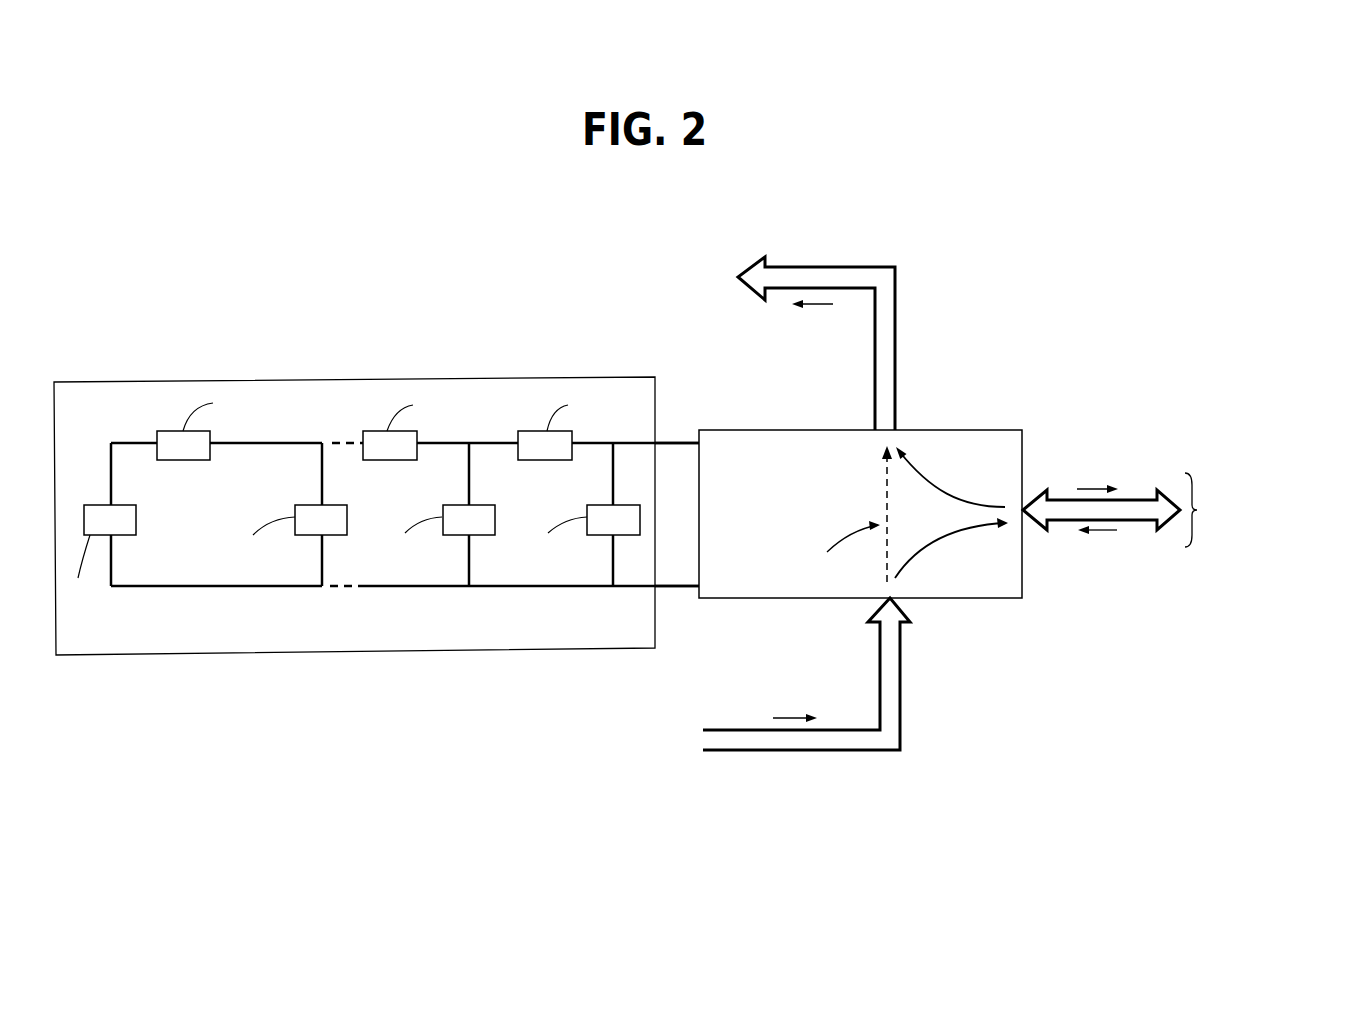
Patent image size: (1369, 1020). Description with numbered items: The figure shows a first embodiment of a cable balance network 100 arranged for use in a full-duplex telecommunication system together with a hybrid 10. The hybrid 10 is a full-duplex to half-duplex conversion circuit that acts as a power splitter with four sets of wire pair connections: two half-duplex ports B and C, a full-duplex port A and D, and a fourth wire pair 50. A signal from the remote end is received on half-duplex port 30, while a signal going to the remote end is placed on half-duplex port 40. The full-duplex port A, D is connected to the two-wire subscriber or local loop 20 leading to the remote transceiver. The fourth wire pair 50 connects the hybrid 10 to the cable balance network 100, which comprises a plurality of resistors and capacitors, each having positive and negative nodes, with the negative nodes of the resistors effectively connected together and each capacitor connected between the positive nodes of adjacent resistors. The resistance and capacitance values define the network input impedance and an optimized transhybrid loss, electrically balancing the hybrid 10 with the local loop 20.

The cable balance network 100 is at (333, 380).
The fourth wire pair 50 is at (670, 440).
The hybrid 10 is at (968, 430).
The half-duplex port (receive path) 30 is at (822, 265).
The half-duplex port (transmit path) 40 is at (833, 750).
The two-wire subscriber or local loop 20 is at (1128, 522).